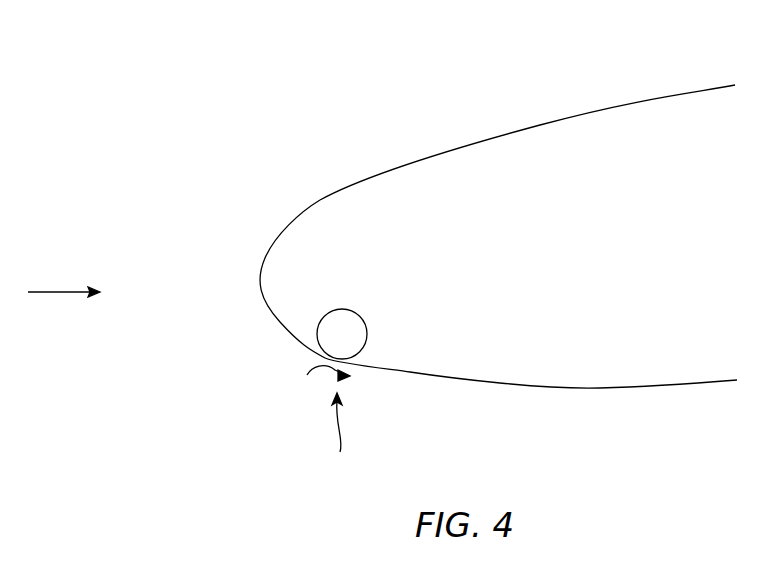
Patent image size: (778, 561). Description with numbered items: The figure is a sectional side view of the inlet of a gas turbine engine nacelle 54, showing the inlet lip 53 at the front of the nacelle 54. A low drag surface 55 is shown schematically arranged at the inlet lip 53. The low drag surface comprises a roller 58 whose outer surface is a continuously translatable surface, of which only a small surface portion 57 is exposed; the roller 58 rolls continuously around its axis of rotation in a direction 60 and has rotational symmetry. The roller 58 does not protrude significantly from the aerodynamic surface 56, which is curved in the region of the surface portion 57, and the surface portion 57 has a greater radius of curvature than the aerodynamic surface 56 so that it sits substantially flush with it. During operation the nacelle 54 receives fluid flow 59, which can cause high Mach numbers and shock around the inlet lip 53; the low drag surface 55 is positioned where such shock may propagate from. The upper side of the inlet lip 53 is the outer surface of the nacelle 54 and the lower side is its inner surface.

The inlet lip 53 is at (287, 228).
The gas turbine engine nacelle 54 is at (572, 117).
The low drag surface 55 is at (339, 433).
The aerodynamic surface 56 is at (372, 368).
The surface portion 57 is at (307, 375).
The roller 58 is at (327, 334).
The fluid flow 59 is at (64, 282).
The direction 60 is at (318, 360).